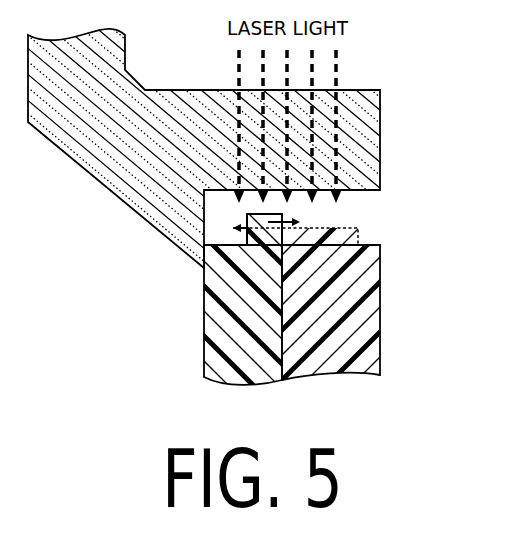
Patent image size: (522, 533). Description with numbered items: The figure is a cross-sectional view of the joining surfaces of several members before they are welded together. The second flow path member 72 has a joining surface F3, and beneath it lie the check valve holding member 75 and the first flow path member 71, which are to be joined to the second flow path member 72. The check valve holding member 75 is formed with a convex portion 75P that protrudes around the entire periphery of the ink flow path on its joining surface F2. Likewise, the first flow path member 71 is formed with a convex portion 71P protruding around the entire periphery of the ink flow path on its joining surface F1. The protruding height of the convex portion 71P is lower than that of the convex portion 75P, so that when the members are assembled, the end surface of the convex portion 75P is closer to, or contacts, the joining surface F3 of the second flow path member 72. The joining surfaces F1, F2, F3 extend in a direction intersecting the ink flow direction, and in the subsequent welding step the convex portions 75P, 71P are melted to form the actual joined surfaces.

The second flow path member 72 is at (368, 143).
The check valve holding member 75 is at (212, 305).
The convex portion 75P is at (247, 214).
The first flow path member 71 is at (375, 305).
The convex portion 71P is at (333, 228).
The joining surface F1 is at (356, 235).
The joining surface F2 is at (233, 229).
The joining surface F3 is at (328, 195).